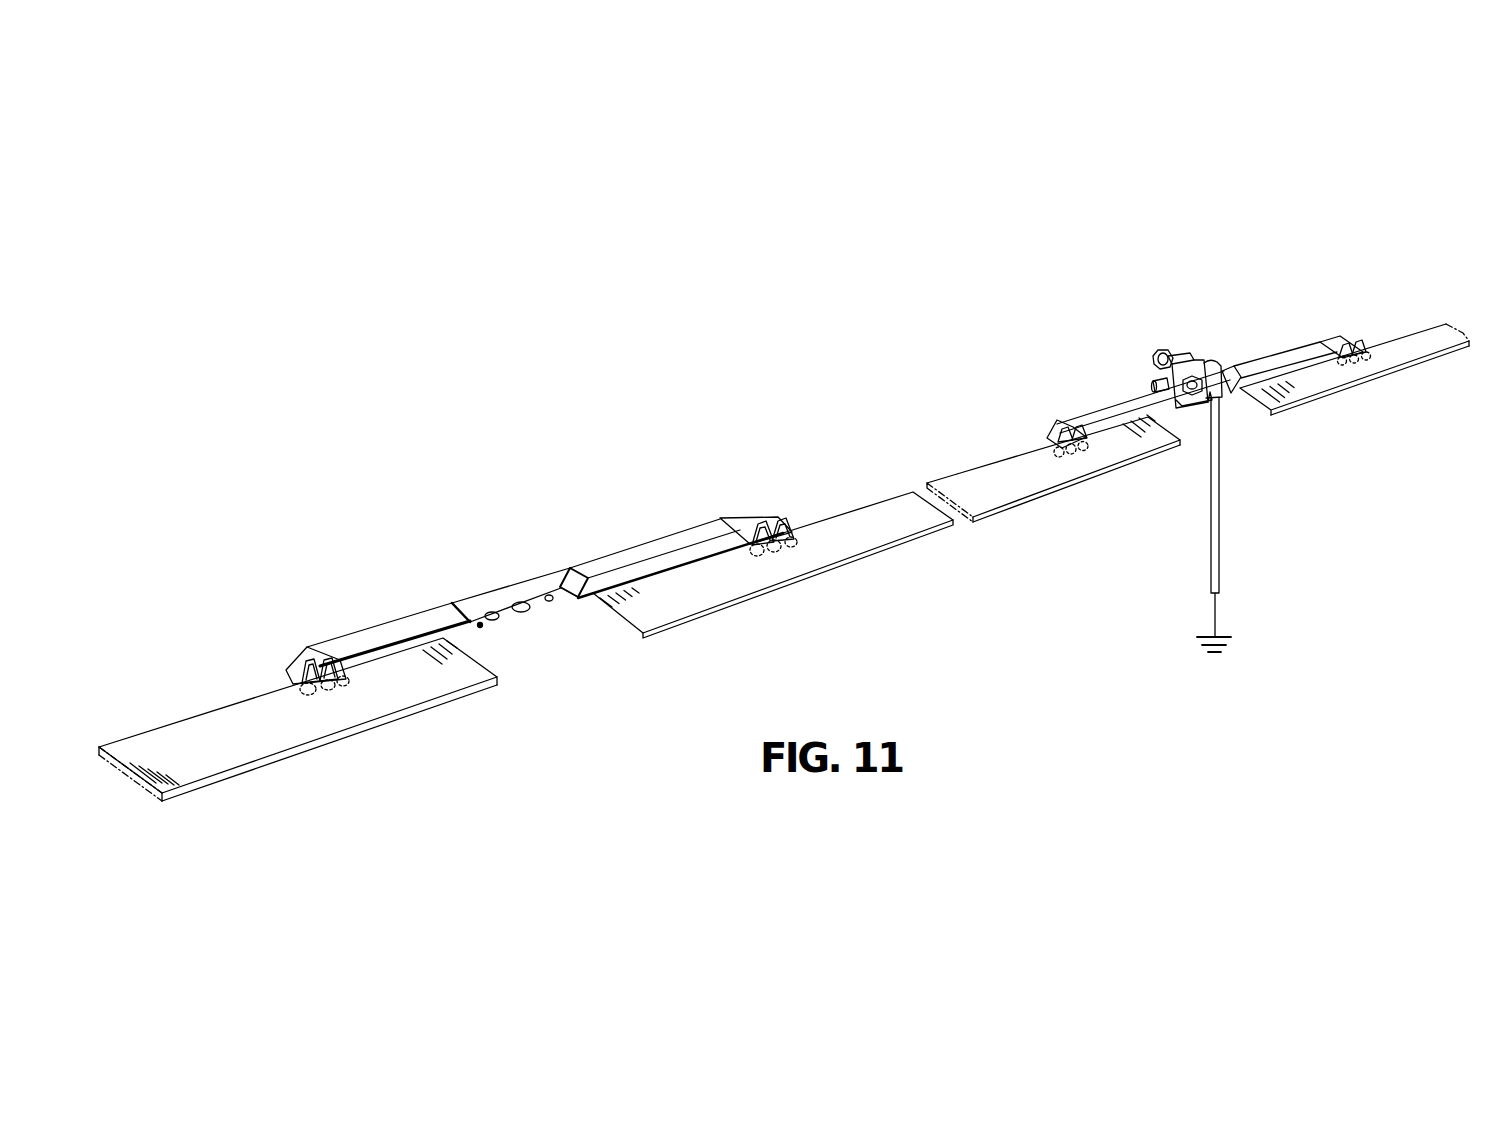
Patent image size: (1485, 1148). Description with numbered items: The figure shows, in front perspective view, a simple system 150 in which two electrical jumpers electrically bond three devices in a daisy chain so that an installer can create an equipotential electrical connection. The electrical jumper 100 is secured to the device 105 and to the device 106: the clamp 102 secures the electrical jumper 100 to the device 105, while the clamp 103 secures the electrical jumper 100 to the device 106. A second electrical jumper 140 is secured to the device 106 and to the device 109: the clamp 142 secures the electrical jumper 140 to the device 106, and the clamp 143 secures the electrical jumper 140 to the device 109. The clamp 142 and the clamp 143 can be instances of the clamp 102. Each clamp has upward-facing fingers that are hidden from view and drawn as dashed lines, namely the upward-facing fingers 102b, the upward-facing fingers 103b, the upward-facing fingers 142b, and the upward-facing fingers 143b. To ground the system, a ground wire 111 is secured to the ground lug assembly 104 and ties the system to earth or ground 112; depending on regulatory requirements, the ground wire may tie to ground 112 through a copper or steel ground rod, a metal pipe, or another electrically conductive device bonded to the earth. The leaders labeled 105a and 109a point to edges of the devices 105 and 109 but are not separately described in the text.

The electrical jumper 100 is at (422, 586).
The clamp 102 is at (310, 612).
The upward-facing fingers 102b is at (319, 696).
The clamp 103 is at (742, 486).
The upward-facing fingers 103b is at (767, 556).
The ground lug assembly 104 is at (1195, 352).
The device 105 is at (214, 682).
The panel edge 105a is at (471, 692).
The device 106 is at (982, 462).
The device 109 is at (1394, 312).
The panel edge 109a is at (909, 540).
The ground wire 111 is at (1220, 469).
The ground 112 is at (1215, 618).
The electrical jumper 140 is at (1120, 376).
The clamp 142 is at (1039, 406).
The upward-facing fingers 142b is at (1070, 453).
The clamp 143 is at (1337, 311).
The upward-facing fingers 143b is at (1340, 367).
The system 150 is at (1150, 264).